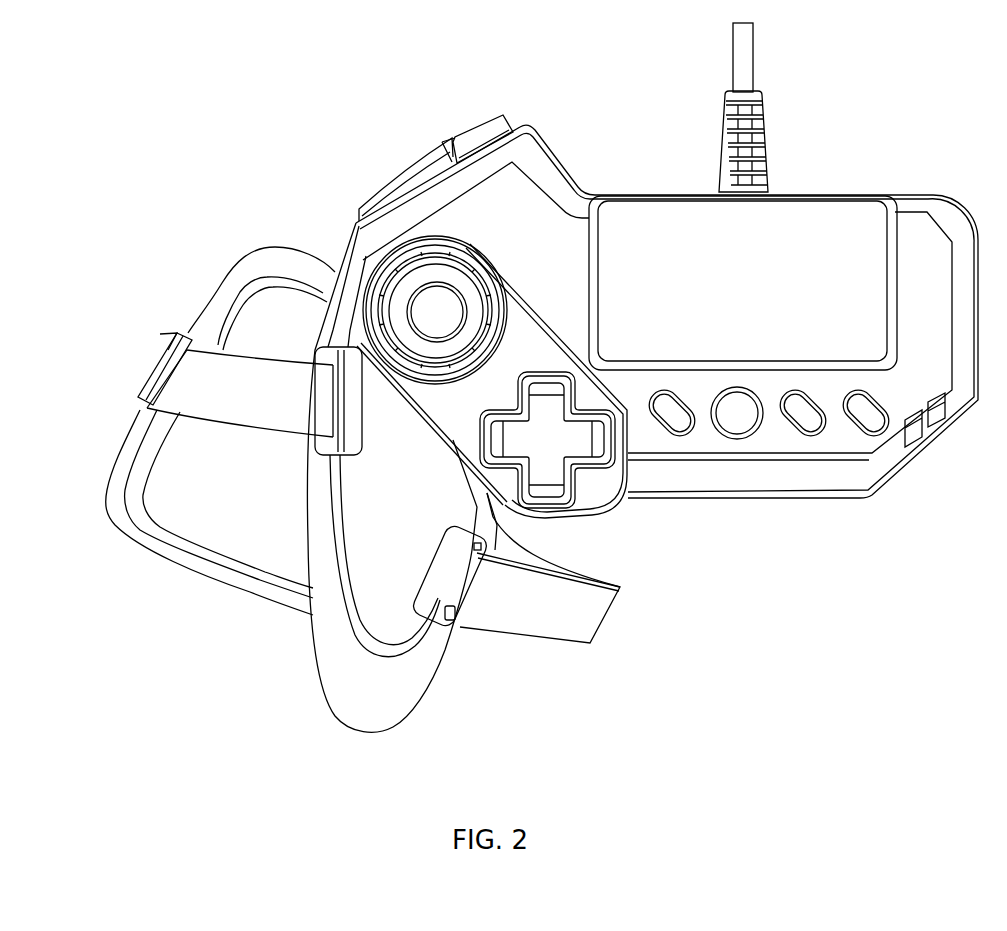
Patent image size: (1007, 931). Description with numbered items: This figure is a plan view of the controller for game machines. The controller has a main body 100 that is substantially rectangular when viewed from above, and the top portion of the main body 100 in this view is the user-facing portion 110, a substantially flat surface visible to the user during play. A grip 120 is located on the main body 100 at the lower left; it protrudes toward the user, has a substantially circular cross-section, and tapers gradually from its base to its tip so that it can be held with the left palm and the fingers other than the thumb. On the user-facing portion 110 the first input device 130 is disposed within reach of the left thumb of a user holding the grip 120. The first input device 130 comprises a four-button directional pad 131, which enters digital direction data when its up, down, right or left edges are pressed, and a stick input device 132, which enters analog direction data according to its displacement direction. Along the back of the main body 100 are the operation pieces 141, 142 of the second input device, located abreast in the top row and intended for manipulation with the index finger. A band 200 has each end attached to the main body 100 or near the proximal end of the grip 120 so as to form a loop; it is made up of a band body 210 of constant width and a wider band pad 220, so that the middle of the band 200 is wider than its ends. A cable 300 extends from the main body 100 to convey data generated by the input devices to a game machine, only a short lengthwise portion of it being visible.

The main body 100 is at (934, 194).
The user-facing portion 110 is at (597, 480).
The grip 120 is at (403, 713).
The first input device 130 is at (450, 685).
The four-button directional pad 131 is at (548, 487).
The stick input device 132 is at (447, 357).
The operation piece 141 is at (405, 180).
The operation piece 142 is at (480, 132).
The band 200 is at (280, 617).
The band body 210 is at (607, 602).
The band pad 220 is at (177, 557).
The cable 300 is at (750, 57).